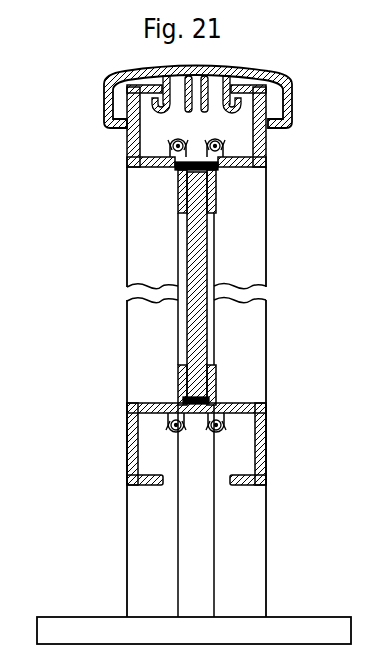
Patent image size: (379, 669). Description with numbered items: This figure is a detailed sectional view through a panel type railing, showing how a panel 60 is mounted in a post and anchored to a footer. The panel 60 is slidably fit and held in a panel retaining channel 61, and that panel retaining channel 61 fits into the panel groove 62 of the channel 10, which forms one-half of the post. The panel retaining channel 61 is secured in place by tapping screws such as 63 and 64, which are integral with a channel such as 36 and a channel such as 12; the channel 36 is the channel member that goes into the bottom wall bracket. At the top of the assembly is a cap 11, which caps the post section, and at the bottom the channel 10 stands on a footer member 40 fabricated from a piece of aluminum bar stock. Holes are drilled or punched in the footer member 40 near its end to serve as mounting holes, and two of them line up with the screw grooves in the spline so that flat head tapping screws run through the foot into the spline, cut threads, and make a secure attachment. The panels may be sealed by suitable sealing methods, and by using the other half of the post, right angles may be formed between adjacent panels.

The channel 10 is at (267, 329).
The cap 11 is at (270, 73).
The channel 12 is at (267, 145).
The channel 36 is at (264, 449).
The footer member 40 is at (313, 617).
The panel 60 is at (208, 253).
The panel retaining channel 61 is at (217, 196).
The panel groove 62 is at (177, 169).
The tapping screw 63 is at (219, 141).
The tapping screw 64 is at (175, 141).